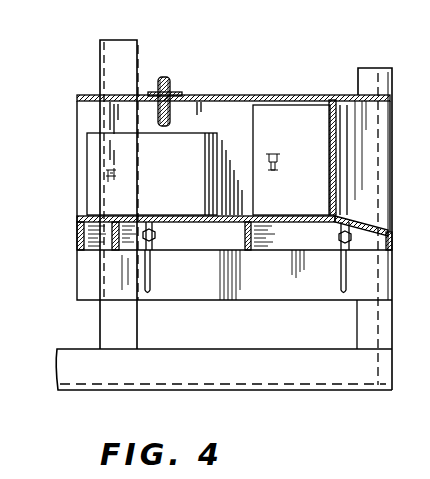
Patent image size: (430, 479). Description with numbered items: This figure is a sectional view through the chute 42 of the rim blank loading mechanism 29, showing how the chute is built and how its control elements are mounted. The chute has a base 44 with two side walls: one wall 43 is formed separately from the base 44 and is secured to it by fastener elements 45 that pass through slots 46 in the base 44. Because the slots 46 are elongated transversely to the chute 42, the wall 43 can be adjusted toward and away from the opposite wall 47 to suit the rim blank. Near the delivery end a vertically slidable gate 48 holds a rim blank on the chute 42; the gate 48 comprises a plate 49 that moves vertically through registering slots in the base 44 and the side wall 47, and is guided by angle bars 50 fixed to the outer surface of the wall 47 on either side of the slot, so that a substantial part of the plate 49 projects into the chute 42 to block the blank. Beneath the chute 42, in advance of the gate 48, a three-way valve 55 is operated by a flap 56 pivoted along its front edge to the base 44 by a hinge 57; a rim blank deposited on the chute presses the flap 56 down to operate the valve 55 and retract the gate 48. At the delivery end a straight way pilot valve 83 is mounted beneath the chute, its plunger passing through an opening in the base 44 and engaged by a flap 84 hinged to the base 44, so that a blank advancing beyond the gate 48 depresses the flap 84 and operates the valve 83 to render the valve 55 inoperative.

The rim blank loading mechanism 29 is at (369, 387).
The chute 42 is at (283, 89).
The wall 43 is at (285, 222).
The base 44 is at (380, 187).
The fastener elements 45 is at (328, 237).
The slots 46 is at (362, 283).
The opposite wall 47 is at (243, 95).
The gate 48 is at (177, 115).
The plate 49 is at (166, 88).
The angle bars 50 is at (171, 90).
The three-way valve 55 is at (274, 171).
The flap 56 is at (293, 117).
The hinge 57 is at (332, 101).
The straight way pilot valve 83 is at (119, 186).
The flap 84 is at (176, 183).